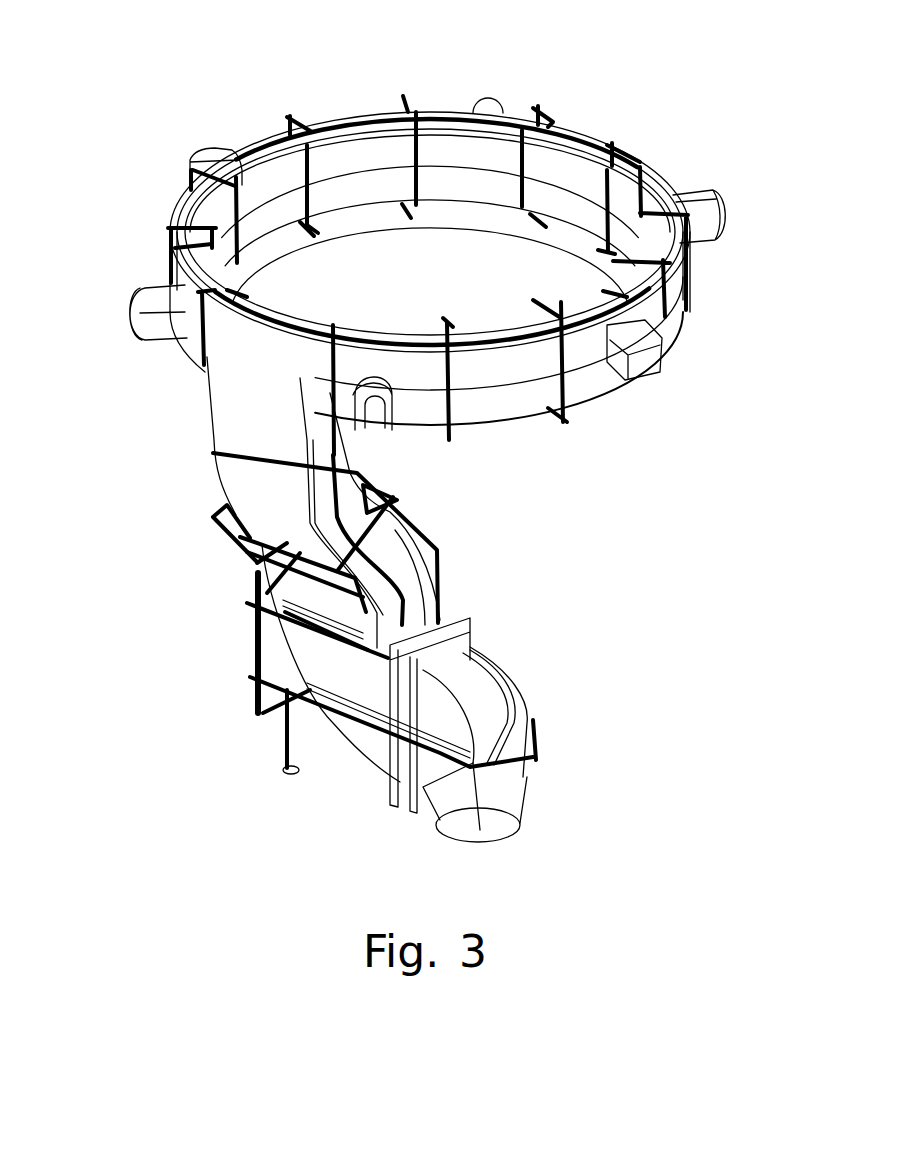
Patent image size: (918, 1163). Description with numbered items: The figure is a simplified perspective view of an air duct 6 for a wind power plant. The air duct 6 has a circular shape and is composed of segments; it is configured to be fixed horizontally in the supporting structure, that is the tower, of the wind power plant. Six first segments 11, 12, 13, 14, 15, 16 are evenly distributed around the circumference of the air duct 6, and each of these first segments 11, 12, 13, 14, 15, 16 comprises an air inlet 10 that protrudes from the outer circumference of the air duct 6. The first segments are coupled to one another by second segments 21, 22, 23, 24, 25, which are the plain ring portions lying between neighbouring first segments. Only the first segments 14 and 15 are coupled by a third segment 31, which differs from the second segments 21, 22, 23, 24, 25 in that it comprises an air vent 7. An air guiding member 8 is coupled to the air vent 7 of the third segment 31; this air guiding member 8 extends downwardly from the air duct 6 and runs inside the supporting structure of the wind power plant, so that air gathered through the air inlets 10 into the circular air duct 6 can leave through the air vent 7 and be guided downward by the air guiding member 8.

The air duct 6 is at (705, 132).
The air vent 7 is at (245, 431).
The air guiding member 8 is at (488, 598).
The air inlet 10 is at (207, 150).
The first segment 11 is at (487, 160).
The first segment 12 is at (626, 218).
The first segment 13 is at (595, 297).
The first segment 14 is at (377, 334).
The first segment 15 is at (232, 289).
The first segment 16 is at (262, 205).
The second segment 21 is at (590, 135).
The second segment 22 is at (688, 287).
The second segment 23 is at (478, 335).
The second segment 24 is at (185, 205).
The second segment 25 is at (352, 117).
The third segment 31 is at (293, 330).